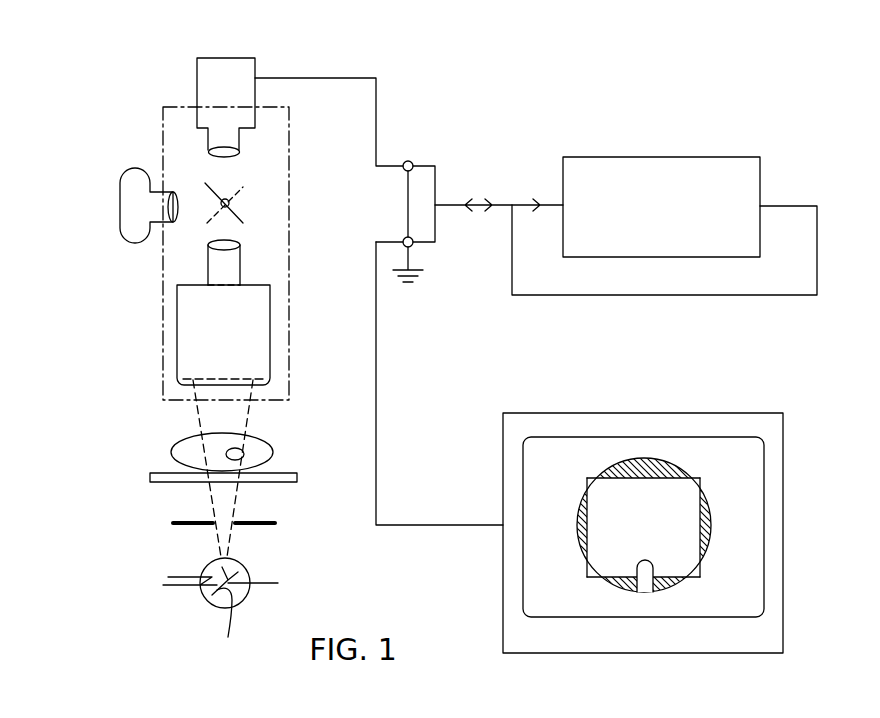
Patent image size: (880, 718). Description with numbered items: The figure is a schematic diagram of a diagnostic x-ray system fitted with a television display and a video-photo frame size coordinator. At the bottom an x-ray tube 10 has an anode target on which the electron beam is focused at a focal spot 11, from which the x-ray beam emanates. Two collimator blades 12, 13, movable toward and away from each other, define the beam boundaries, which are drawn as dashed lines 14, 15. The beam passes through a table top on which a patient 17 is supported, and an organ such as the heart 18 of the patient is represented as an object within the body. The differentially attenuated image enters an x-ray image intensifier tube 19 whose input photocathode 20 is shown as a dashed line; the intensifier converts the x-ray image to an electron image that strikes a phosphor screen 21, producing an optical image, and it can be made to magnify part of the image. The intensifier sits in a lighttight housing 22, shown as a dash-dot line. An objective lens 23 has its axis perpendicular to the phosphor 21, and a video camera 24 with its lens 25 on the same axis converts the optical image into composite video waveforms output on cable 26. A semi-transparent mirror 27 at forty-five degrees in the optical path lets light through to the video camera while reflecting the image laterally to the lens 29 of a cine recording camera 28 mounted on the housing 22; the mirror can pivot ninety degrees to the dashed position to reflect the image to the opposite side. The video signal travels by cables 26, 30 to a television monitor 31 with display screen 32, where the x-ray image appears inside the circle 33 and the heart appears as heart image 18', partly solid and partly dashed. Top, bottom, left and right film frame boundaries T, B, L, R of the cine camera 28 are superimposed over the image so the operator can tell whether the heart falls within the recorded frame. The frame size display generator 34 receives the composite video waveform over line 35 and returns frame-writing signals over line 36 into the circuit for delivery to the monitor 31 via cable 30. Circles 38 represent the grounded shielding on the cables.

The x-ray tube 10 is at (262, 567).
The focal spot 11 is at (231, 626).
The collimator blade 12 is at (185, 518).
The collimator blade 13 is at (265, 522).
The x-ray beam boundary 14 is at (198, 415).
The x-ray beam boundary 15 is at (248, 417).
The patient 17 is at (172, 452).
The heart 18 is at (278, 455).
The heart image 18' is at (626, 627).
The x-ray image intensifier tube 19 is at (163, 360).
The x-ray image input photocathode 20 is at (237, 378).
The phosphor screen 21 is at (218, 285).
The intensifier housing 22 is at (289, 327).
The objective lens 23 is at (237, 240).
The video camera 24 is at (243, 58).
The video camera lens 25 is at (227, 157).
The cable 26 is at (343, 78).
The semi-transparent mirror 27 is at (240, 213).
The cine recording camera 28 is at (122, 166).
The cine camera lens 29 is at (178, 213).
The cable 30 is at (376, 402).
The television monitor 31 is at (783, 493).
The display screen 32 is at (740, 450).
The circle 33 is at (663, 458).
The frame size display generator 34 is at (697, 158).
The line 35 is at (503, 197).
The line 36 is at (650, 297).
The cable shielding 38 is at (410, 160).
The top frame boundary T is at (597, 477).
The left side frame boundary L is at (582, 570).
The right side frame boundary R is at (700, 570).
The bottom frame boundary B is at (690, 575).